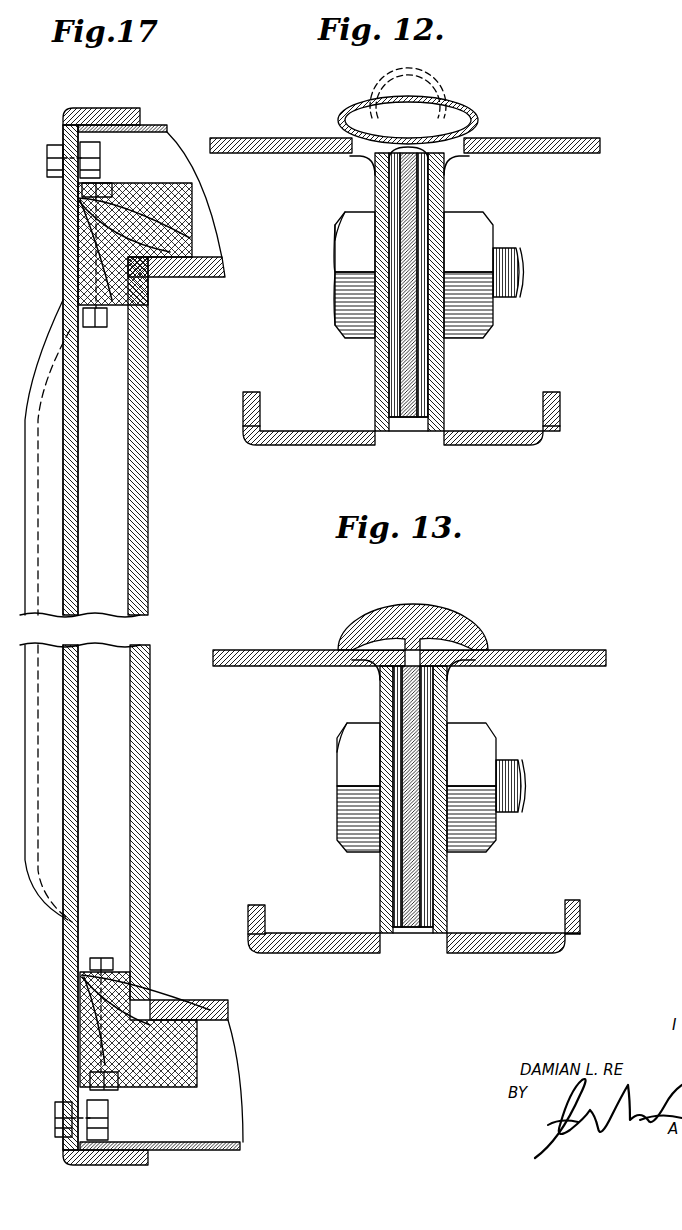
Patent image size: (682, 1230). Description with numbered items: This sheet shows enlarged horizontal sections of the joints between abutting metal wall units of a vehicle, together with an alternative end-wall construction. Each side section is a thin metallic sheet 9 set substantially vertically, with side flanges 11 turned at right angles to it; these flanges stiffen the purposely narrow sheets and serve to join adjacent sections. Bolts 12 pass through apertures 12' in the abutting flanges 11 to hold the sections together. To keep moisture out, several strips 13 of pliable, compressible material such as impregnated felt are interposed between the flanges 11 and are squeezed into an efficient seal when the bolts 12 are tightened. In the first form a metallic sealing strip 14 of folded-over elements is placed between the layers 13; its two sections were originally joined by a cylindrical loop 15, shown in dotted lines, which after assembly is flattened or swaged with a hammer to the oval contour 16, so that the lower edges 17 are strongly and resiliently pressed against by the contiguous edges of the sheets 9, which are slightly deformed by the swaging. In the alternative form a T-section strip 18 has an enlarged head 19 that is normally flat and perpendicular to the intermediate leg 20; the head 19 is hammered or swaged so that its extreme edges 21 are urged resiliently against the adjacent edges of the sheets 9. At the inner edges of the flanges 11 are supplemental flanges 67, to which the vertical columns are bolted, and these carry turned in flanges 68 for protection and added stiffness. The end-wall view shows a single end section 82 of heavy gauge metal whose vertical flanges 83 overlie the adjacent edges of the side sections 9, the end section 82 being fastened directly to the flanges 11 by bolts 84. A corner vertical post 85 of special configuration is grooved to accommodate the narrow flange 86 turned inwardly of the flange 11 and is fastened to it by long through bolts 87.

In FIG. 12, the thin metallic sheet 9 is at (230, 138).
In FIG. 13, the thin metallic sheet 9 is at (228, 648).
In FIG. 17, the thin metallic sheet 9 is at (160, 125).
In FIG. 12, the side flanges 11 is at (375, 376).
In FIG. 13, the side flanges 11 is at (382, 890).
In FIG. 17, the side flanges 11 is at (68, 120).
In FIG. 12, the bolts 12 is at (507, 275).
In FIG. 13, the bolts 12 is at (509, 787).
In FIG. 12, the apertures 12' is at (421, 264).
In FIG. 13, the apertures 12' is at (423, 784).
In FIG. 12, the strips of impregnated felt 13 is at (420, 232).
In FIG. 13, the strips of impregnated felt 13 is at (398, 864).
In FIG. 12, the sealing strip 14 is at (418, 204).
In FIG. 12, the cylindrical loop 15 is at (446, 70).
In FIG. 12, the oval contour 16 is at (430, 101).
In FIG. 12, the lower edges 17 is at (358, 157).
In FIG. 13, the T-section strip 18 is at (420, 710).
In FIG. 13, the enlarged head 19 is at (390, 612).
In FIG. 13, the intermediate leg 20 is at (414, 933).
In FIG. 13, the extreme edges 21 is at (350, 668).
In FIG. 12, the supplemental flanges 67 is at (300, 444).
In FIG. 13, the supplemental flanges 67 is at (283, 956).
In FIG. 12, the turned in flanges 68 is at (248, 392).
In FIG. 13, the turned in flanges 68 is at (248, 905).
In FIG. 17, the end section 82 is at (66, 332).
In FIG. 17, the vertical flanges 83 is at (140, 112).
In FIG. 17, the bolts 84 is at (52, 142).
In FIG. 17, the corner vertical post 85 is at (156, 194).
In FIG. 17, the narrow flange 86 is at (78, 202).
In FIG. 17, the long through bolts 87 is at (82, 252).